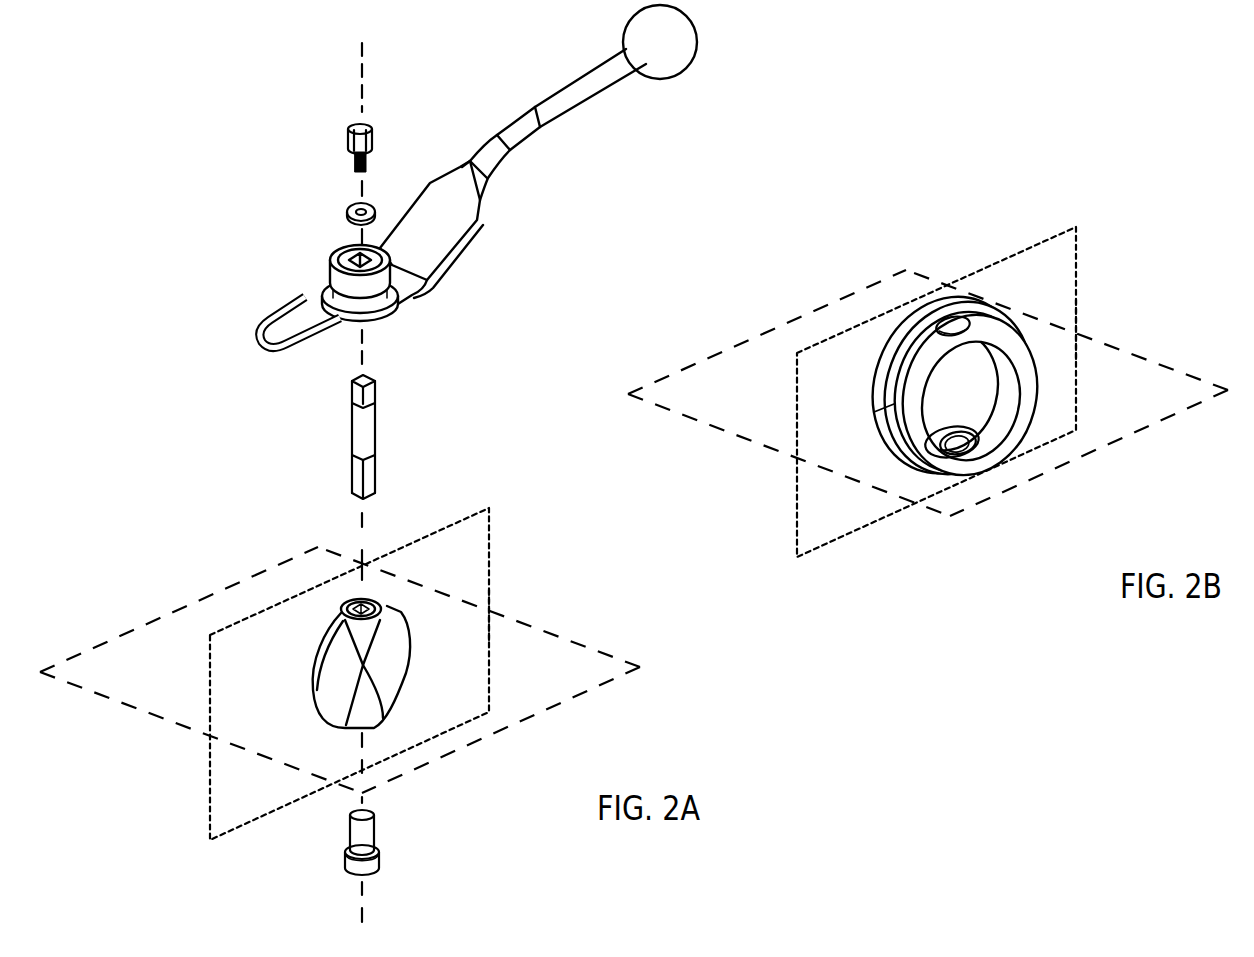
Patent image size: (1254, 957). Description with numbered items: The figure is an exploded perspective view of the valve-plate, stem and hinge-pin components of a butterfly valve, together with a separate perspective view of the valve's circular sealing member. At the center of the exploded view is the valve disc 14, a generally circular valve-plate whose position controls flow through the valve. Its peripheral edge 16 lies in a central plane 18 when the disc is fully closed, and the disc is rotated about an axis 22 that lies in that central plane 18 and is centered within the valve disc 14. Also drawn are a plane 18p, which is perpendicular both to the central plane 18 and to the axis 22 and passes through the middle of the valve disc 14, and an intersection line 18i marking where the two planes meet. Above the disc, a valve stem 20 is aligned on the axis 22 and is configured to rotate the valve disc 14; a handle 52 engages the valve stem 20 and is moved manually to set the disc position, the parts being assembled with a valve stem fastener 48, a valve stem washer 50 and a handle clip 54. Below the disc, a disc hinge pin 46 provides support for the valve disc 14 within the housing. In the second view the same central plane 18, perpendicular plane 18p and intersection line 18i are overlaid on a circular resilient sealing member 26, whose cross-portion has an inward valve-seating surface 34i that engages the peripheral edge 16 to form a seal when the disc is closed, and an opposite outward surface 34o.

In FIG. 2A, the valve disc 14 is at (352, 689).
In FIG. 2A, the peripheral edge 16 is at (314, 660).
In FIG. 2A, the central plane 18 is at (485, 560).
In FIG. 2B, the central plane 18 is at (1070, 280).
In FIG. 2A, the intersection line 18i is at (462, 619).
In FIG. 2B, the intersection line 18i is at (1054, 338).
In FIG. 2A, the perpendicular plane 18p is at (592, 679).
In FIG. 2B, the perpendicular plane 18p is at (1180, 399).
In FIG. 2A, the valve stem 20 is at (362, 424).
In FIG. 2A, the axis 22 is at (362, 533).
In FIG. 2B, the resilient sealing member 26 is at (988, 382).
In FIG. 2B, the outward surface 34o is at (918, 350).
In FIG. 2B, the inward valve-seating surface 34i is at (988, 398).
In FIG. 2A, the disc hinge pin 46 is at (364, 840).
In FIG. 2A, the valve stem fastener 48 is at (364, 126).
In FIG. 2A, the valve stem washer 50 is at (348, 209).
In FIG. 2A, the handle 52 is at (558, 100).
In FIG. 2A, the handle clip 54 is at (292, 342).